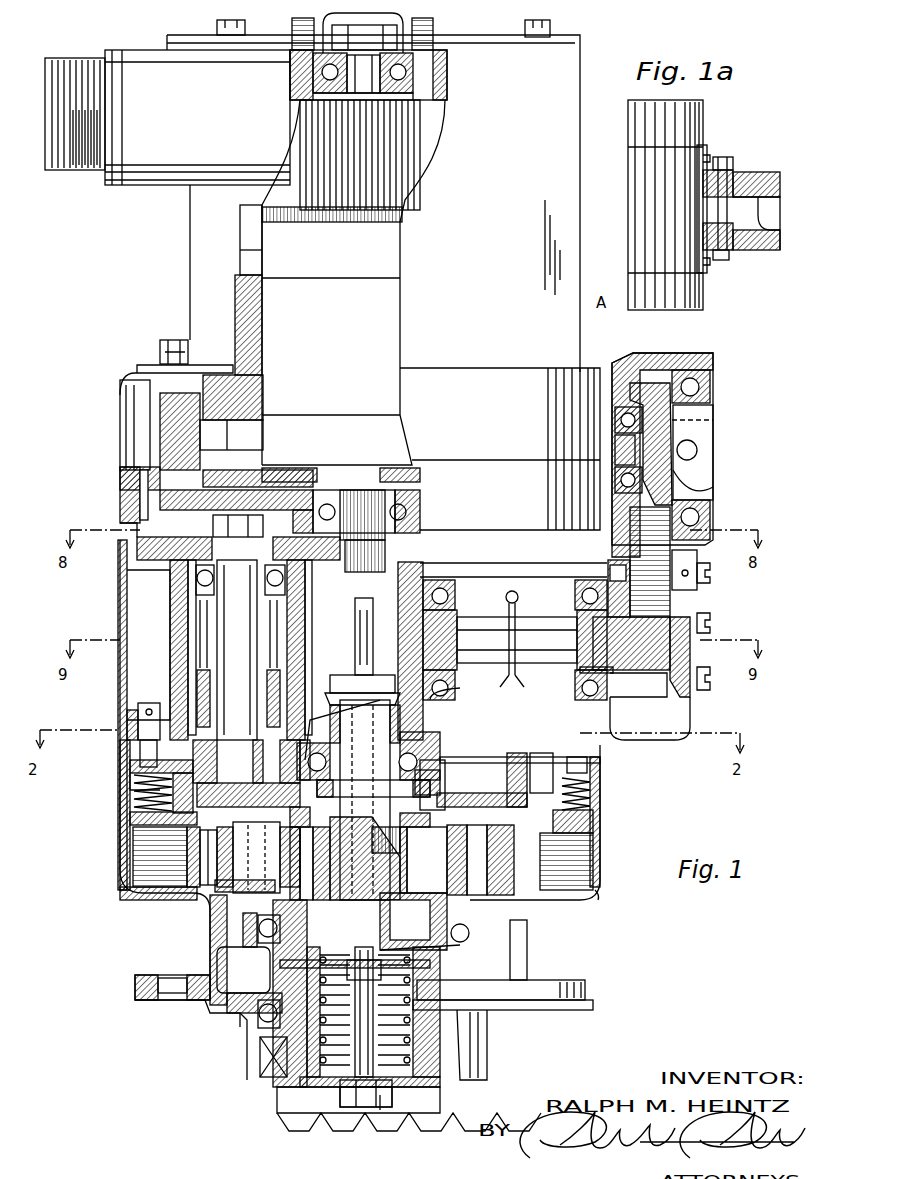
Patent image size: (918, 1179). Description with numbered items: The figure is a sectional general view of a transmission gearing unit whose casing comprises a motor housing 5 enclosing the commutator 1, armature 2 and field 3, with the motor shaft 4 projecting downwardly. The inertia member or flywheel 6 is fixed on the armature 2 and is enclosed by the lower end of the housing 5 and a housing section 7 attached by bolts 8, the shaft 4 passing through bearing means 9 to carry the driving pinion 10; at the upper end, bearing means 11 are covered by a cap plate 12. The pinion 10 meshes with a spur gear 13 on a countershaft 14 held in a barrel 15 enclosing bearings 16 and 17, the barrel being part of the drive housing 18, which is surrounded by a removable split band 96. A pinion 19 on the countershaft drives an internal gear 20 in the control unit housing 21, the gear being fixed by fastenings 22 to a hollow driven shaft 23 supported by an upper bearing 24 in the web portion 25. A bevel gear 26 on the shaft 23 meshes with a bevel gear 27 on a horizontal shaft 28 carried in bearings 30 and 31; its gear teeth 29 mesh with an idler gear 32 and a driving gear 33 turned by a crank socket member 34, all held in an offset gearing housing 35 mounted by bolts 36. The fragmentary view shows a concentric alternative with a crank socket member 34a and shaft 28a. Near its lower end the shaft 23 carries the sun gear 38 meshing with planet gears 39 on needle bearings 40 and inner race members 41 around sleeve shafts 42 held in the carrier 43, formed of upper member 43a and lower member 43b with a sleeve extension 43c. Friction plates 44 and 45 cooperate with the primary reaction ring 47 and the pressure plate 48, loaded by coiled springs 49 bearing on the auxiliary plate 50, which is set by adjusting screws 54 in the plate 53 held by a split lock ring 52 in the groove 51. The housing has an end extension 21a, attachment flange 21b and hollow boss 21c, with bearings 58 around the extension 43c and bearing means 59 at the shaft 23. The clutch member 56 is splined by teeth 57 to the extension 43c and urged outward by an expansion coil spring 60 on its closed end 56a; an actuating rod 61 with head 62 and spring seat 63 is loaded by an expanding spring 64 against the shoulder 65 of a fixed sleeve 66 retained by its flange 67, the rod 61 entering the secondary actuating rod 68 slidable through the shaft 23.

In FIG. 1, the commutator 1 is at (395, 150).
In FIG. 1, the armature 2 is at (385, 300).
In FIG. 1, the field 3 is at (240, 305).
In FIG. 1, the motor shaft 4 is at (380, 545).
In FIG. 1, the motor housing 5 is at (568, 220).
In FIG. 1, the inertia member or flywheel 6 is at (242, 485).
In FIG. 1, the housing section 7 is at (122, 478).
In FIG. 1a, the housing section 7 is at (700, 140).
In FIG. 1, the bolts 8 is at (140, 495).
In FIG. 1, the bearing means 9 is at (325, 490).
In FIG. 1, the driving pinion 10 is at (348, 578).
In FIG. 1, the bearing means 11 is at (312, 82).
In FIG. 1, the cap plate 12 is at (380, 26).
In FIG. 1, the spur gear 13 is at (160, 548).
In FIG. 1, the countershaft 14 is at (236, 630).
In FIG. 1, the barrel 15 is at (312, 622).
In FIG. 1, the bearing 16 is at (298, 582).
In FIG. 1, the bearing 17 is at (210, 685).
In FIG. 1, the drive housing 18 is at (150, 595).
In FIG. 1, the pinion 19 is at (248, 748).
In FIG. 1, the internal gear 20 is at (490, 790).
In FIG. 1, the control unit housing 21 is at (120, 848).
In FIG. 1, the end extension 21a is at (527, 935).
In FIG. 1, the attachment flange 21b is at (587, 990).
In FIG. 1, the hollow boss 21c is at (487, 1050).
In FIG. 1, the fastenings 22 is at (446, 788).
In FIG. 1, the driven shaft 23 is at (386, 806).
In FIG. 1, the upper bearing 24 is at (475, 718).
In FIG. 1, the lower horizontal web portion 25 is at (480, 725).
In FIG. 1, the bevel gear 26 is at (422, 722).
In FIG. 1, the bevel gear 27 is at (455, 552).
In FIG. 1, the horizontal shaft 28 is at (495, 617).
In FIG. 1a, the horizontal shaft 28a is at (712, 255).
In FIG. 1, the gear teeth 29 is at (655, 683).
In FIG. 1, the bearing 30 is at (448, 585).
In FIG. 1, the bearing 31 is at (592, 580).
In FIG. 1, the idler gear 32 is at (715, 530).
In FIG. 1, the driving gear 33 is at (648, 370).
In FIG. 1, the crank socket member 34 is at (710, 437).
In FIG. 1a, the crank socket member 34a is at (765, 200).
In FIG. 1, the offset or eccentric gearing housing 35 is at (680, 728).
In FIG. 1, the bolts 36 is at (710, 585).
In FIG. 1, the sun gear 38 is at (423, 860).
In FIG. 1, the planet gears 39 is at (180, 890).
In FIG. 1, the needle bearings 40 is at (205, 895).
In FIG. 1, the inner race members 41 is at (240, 905).
In FIG. 1, the sleeve shafts 42 is at (218, 810).
In FIG. 1, the planetary gear carrier or spider 43 is at (470, 945).
In FIG. 1, the upper member 43a is at (508, 812).
In FIG. 1, the lower member 43b is at (486, 929).
In FIG. 1, the sleeve extension 43c is at (260, 1050).
In FIG. 1, the friction plates 44 is at (595, 855).
In FIG. 1, the friction plates 45 is at (600, 885).
In FIG. 1, the primary reaction ring 47 is at (132, 868).
In FIG. 1, the combined pressure and secondary reaction plate 48 is at (602, 832).
In FIG. 1, the coiled springs 49 is at (134, 796).
In FIG. 1, the auxiliary pressure and adjusting plate 50 is at (590, 778).
In FIG. 1, the annular internal groove 51 is at (118, 752).
In FIG. 1, the split lock ring 52 is at (127, 718).
In FIG. 1, the adjusting screw plate or ring 53 is at (128, 777).
In FIG. 1, the adjusting screws 54 is at (149, 703).
In FIG. 1, the engine engaging clutch or driven member 56 is at (270, 1115).
In FIG. 1, the outer closed end 56a is at (345, 1112).
In FIG. 1, the splined connecting teeth 57 is at (285, 1085).
In FIG. 1, the bearings 58 is at (268, 980).
In FIG. 1, the bearing means 59 is at (410, 900).
In FIG. 1, the expansion coil spring 60 is at (355, 1093).
In FIG. 1, the actuating rod 61 is at (400, 1062).
In FIG. 1, the head 62 is at (382, 1110).
In FIG. 1, the spring seat 63 is at (415, 980).
In FIG. 1, the expanding spring 64 is at (373, 1020).
In FIG. 1, the outer end shoulder portion 65 is at (420, 1075).
In FIG. 1, the fixed sleeve 66 is at (400, 1040).
In FIG. 1, the inner end flange 67 is at (470, 960).
In FIG. 1, the secondary actuating rod 68 is at (355, 650).
In FIG. 1, the split band 96 is at (118, 628).